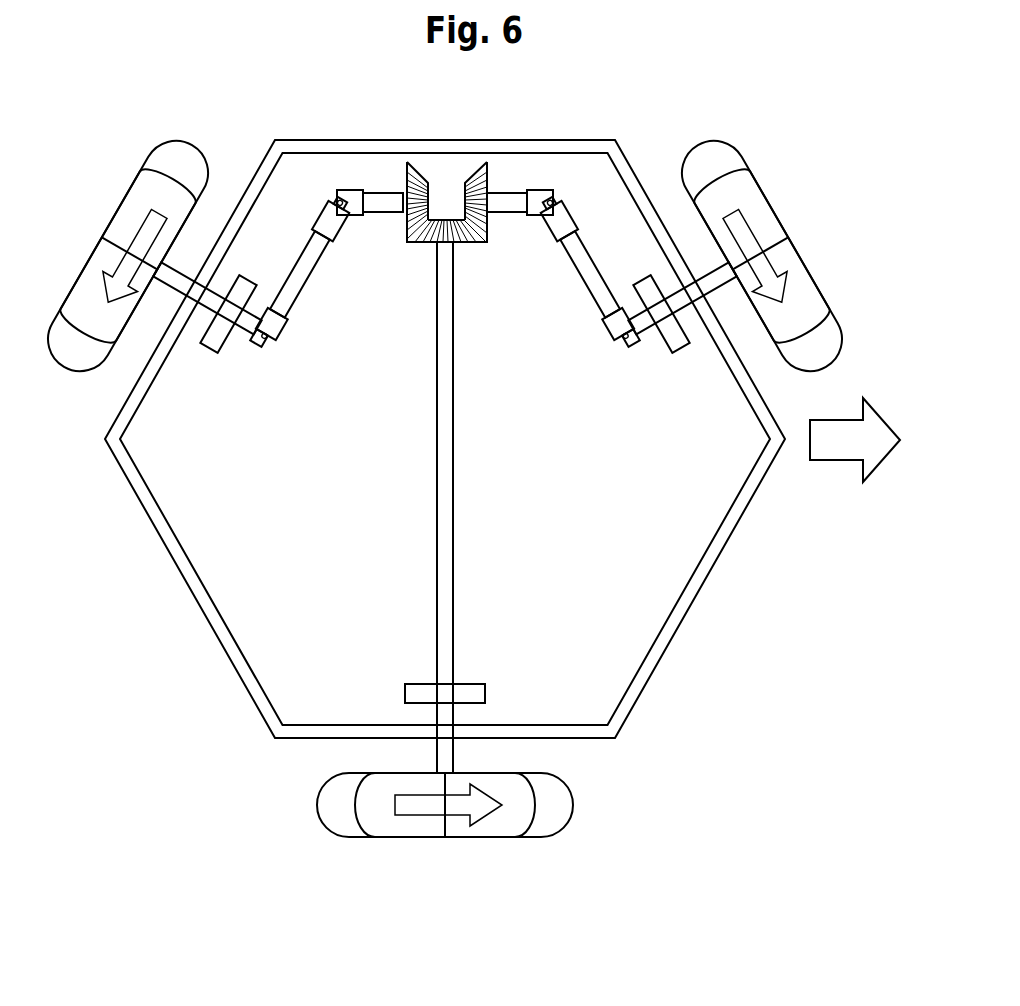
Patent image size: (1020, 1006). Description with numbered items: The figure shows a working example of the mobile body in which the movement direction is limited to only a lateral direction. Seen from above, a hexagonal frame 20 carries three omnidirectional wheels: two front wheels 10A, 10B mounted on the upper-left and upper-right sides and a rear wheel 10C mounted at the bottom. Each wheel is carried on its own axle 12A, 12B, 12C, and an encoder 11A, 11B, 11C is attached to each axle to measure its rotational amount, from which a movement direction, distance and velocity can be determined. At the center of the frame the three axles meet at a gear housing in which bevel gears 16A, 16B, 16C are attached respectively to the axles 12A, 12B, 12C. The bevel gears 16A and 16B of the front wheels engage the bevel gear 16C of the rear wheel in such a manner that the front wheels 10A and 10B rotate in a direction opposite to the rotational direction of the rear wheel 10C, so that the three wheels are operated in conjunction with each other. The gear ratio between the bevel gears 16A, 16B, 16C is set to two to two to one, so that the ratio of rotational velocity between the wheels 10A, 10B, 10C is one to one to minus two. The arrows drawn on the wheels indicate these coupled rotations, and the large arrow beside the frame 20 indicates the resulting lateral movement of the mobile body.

The frame 20 is at (575, 140).
The bevel gear 16A is at (470, 163).
The bevel gear 16B is at (425, 163).
The bevel gear 16C is at (473, 245).
The axle 12A is at (518, 208).
The axle 12B is at (374, 208).
The axle 12C is at (453, 490).
The encoder 11A is at (682, 342).
The encoder 11B is at (208, 342).
The encoder 11C is at (485, 691).
The front wheel 10A is at (760, 198).
The front wheel 10B is at (130, 198).
The rear wheel 10C is at (507, 838).